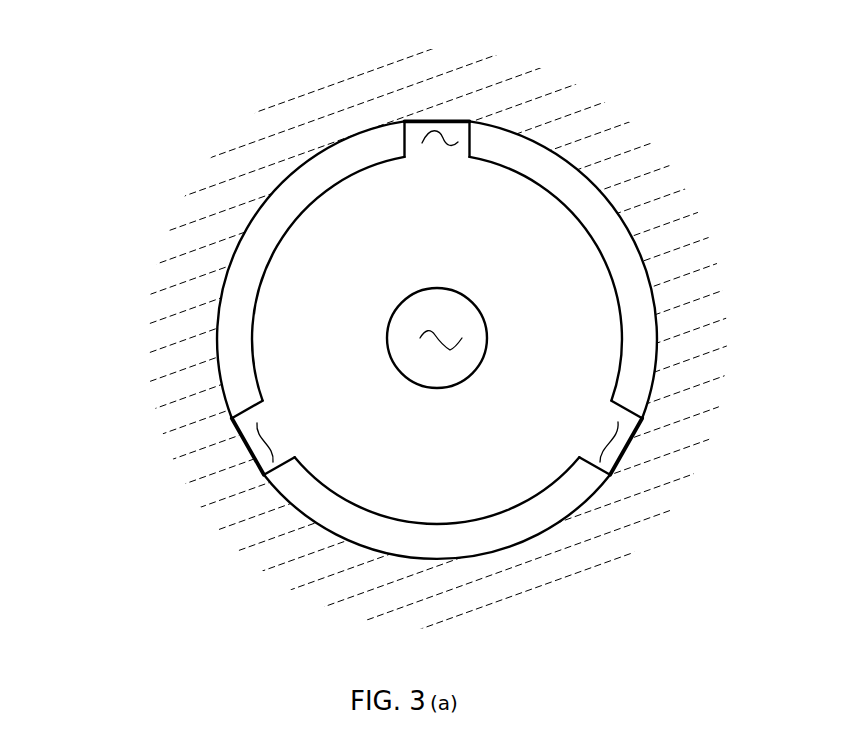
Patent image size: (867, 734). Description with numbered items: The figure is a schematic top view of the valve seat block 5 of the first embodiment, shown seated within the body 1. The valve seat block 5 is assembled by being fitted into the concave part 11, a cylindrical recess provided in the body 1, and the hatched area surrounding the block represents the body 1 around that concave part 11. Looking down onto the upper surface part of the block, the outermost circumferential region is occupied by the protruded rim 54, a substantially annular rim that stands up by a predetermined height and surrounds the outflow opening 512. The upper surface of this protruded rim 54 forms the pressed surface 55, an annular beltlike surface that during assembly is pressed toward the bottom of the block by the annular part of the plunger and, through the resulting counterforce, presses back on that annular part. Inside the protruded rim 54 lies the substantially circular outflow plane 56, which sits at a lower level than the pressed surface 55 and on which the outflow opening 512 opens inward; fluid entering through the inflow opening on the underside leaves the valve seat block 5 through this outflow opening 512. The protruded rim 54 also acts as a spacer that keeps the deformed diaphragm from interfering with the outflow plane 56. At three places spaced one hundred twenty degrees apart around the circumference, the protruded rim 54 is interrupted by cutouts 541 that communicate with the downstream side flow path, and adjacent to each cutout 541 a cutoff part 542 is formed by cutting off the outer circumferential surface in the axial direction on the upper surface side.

The body 1 is at (385, 367).
The concave part 11 is at (226, 281).
The valve seat block 5 is at (435, 344).
The protruded rim 54 is at (238, 242).
The pressed surface 55 is at (285, 231).
The outflow plane 56 is at (443, 358).
The outflow opening 512 is at (443, 338).
The cutout 541 is at (443, 140).
The cutoff part 542 is at (415, 120).